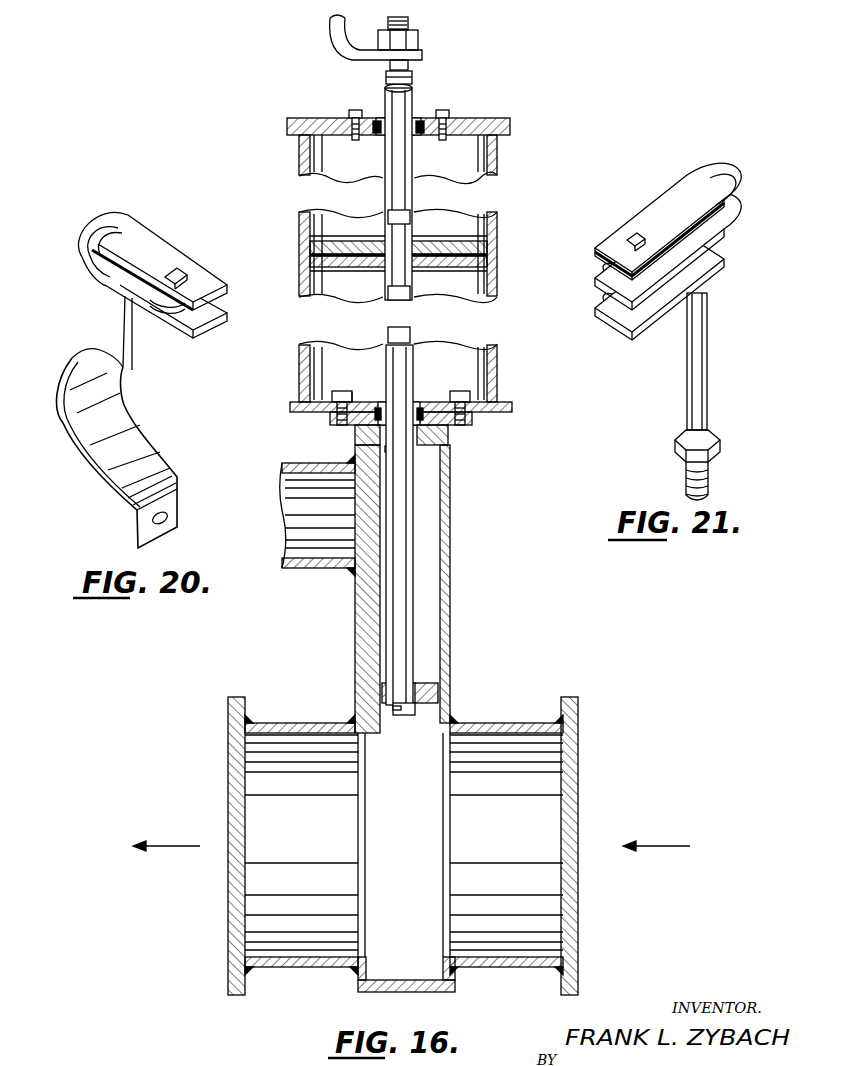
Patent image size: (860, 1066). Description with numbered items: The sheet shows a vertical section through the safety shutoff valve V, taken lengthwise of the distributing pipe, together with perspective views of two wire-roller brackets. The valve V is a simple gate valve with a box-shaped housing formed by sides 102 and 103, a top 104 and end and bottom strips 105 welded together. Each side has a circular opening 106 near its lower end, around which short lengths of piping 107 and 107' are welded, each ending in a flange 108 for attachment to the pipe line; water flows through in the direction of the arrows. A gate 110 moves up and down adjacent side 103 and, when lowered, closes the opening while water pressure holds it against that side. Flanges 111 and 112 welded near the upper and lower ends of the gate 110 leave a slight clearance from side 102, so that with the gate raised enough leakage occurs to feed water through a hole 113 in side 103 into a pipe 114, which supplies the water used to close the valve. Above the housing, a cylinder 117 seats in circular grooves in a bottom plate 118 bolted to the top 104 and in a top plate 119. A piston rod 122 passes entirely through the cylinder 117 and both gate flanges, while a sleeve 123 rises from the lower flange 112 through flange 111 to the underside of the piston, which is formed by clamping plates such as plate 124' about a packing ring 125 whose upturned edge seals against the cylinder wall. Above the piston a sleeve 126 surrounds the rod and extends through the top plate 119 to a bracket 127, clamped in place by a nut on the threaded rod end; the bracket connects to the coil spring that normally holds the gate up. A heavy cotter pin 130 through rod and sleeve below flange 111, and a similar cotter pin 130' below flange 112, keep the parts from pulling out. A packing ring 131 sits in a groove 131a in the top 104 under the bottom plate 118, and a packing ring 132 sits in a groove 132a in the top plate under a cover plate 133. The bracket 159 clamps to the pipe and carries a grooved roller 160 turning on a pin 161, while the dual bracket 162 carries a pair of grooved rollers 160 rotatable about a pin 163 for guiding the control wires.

In FIG. 16, the side 102 is at (448, 538).
In FIG. 16, the side 103 is at (356, 645).
In FIG. 16, the top 104 is at (455, 428).
In FIG. 16, the end and bottom strips 105 is at (414, 992).
In FIG. 16, the circular opening 106 is at (366, 818).
In FIG. 16, the piping 107 is at (301, 834).
In FIG. 16, the piping 107' is at (506, 832).
In FIG. 16, the flanges 108 is at (236, 697).
In FIG. 16, the gate 110 is at (372, 505).
In FIG. 16, the flange 111 is at (444, 460).
In FIG. 16, the flange 112 is at (438, 690).
In FIG. 16, the hole 113 is at (370, 521).
In FIG. 16, the pipe 114 is at (331, 570).
In FIG. 16, the cylinder 117 is at (300, 180).
In FIG. 16, the bottom plate 118 is at (292, 405).
In FIG. 16, the top plate 119 is at (290, 128).
In FIG. 16, the piston rod 122 is at (408, 78).
In FIG. 16, the sleeve 123 is at (388, 344).
In FIG. 16, the plate 124' is at (398, 256).
In FIG. 16, the packing ring 125 is at (452, 240).
In FIG. 16, the sleeve 126 is at (384, 100).
In FIG. 16, the bracket 127 is at (350, 54).
In FIG. 16, the cotter pin 130 is at (349, 443).
In FIG. 16, the cotter pin 130' is at (393, 737).
In FIG. 16, the packing ring 131 is at (427, 362).
In FIG. 16, the groove 131a is at (375, 397).
In FIG. 16, the packing ring 132 is at (419, 134).
In FIG. 16, the groove 132a is at (378, 134).
In FIG. 16, the cover plate 133 is at (352, 112).
In FIG. 16, the safety shutoff valve V is at (458, 648).
In FIG. 20, the bracket 159 is at (74, 358).
In FIG. 20, the grooved roller 160 is at (212, 331).
In FIG. 21, the grooved roller 160 is at (612, 268).
In FIG. 20, the pin 161 is at (187, 277).
In FIG. 21, the dual bracket 162 is at (712, 282).
In FIG. 21, the pin 163 is at (633, 240).